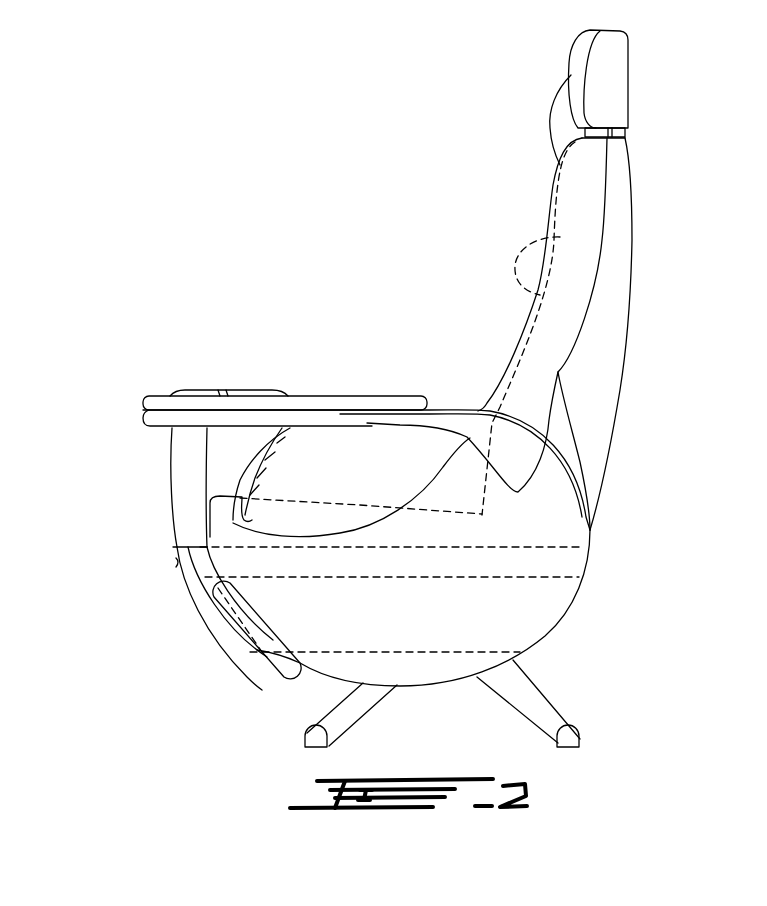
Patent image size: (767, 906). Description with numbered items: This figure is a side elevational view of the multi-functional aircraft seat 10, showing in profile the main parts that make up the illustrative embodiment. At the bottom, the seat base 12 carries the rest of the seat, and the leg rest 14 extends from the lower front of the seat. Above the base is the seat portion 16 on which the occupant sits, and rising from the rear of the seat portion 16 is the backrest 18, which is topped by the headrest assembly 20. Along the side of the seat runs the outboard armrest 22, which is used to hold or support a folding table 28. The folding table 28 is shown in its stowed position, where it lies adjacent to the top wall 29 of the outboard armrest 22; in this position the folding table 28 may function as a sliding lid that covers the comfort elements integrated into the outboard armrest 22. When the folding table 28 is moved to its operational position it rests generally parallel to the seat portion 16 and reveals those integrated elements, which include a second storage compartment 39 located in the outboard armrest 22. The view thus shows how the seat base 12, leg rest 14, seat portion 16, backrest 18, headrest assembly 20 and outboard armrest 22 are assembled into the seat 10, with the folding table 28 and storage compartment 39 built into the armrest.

The multi-functional seat 10 is at (444, 212).
The seat base 12 is at (535, 698).
The leg rest 14 is at (287, 668).
The seat portion 16 is at (358, 505).
The backrest 18 is at (560, 237).
The headrest assembly 20 is at (602, 78).
The outboard armrest 22 is at (168, 507).
The folding table 28 is at (285, 397).
The top wall 29 is at (208, 428).
The second storage compartment 39 is at (250, 562).